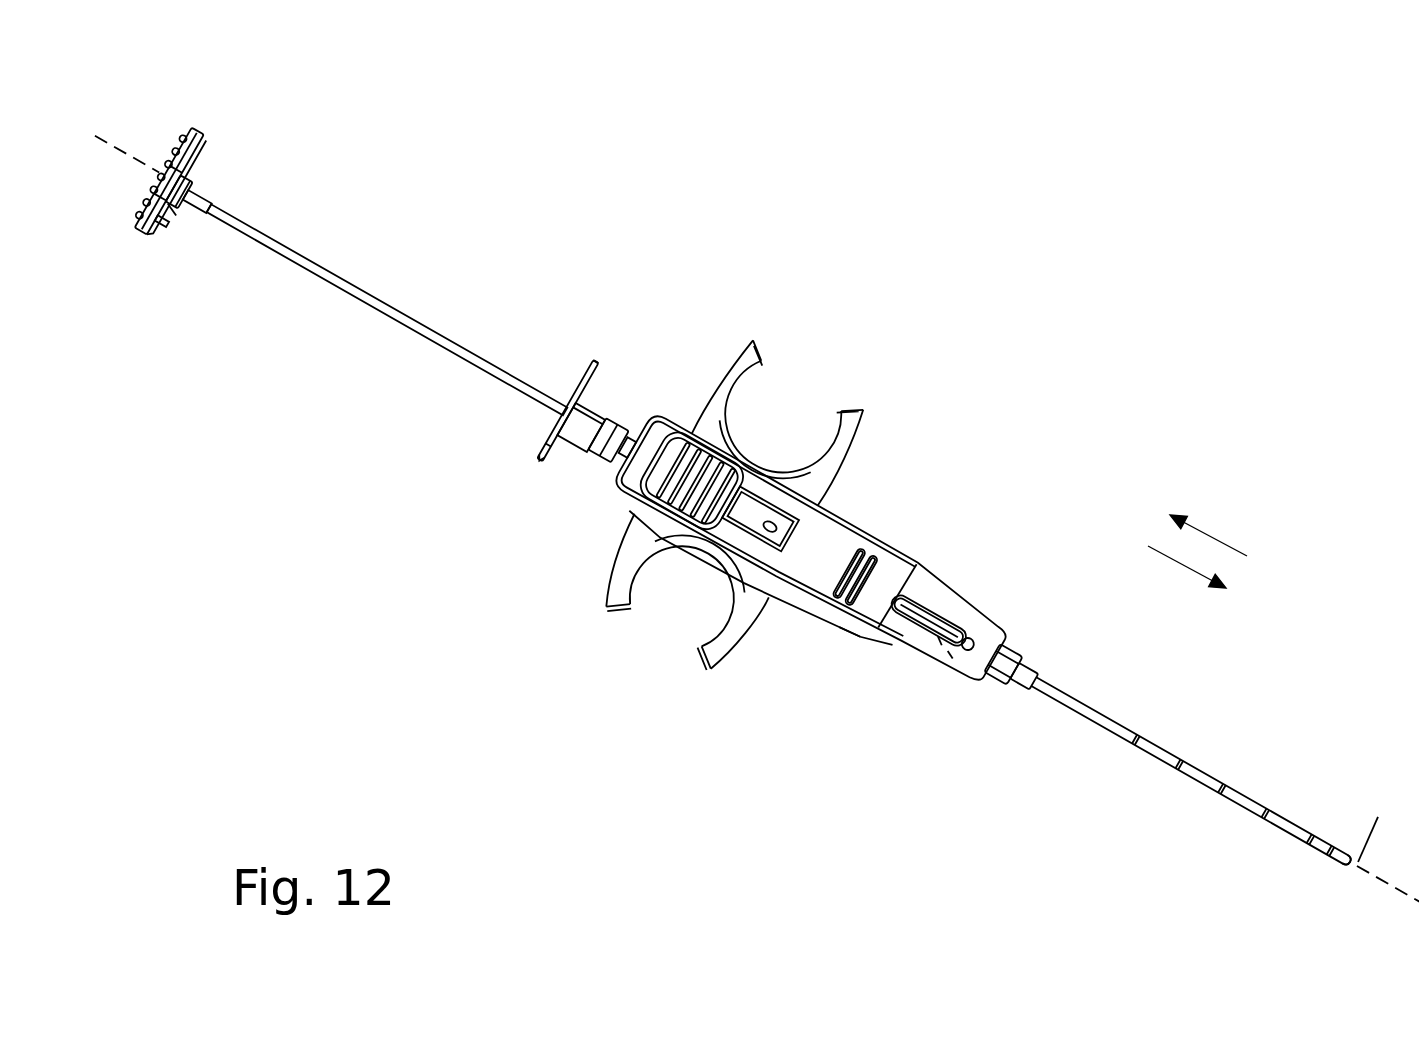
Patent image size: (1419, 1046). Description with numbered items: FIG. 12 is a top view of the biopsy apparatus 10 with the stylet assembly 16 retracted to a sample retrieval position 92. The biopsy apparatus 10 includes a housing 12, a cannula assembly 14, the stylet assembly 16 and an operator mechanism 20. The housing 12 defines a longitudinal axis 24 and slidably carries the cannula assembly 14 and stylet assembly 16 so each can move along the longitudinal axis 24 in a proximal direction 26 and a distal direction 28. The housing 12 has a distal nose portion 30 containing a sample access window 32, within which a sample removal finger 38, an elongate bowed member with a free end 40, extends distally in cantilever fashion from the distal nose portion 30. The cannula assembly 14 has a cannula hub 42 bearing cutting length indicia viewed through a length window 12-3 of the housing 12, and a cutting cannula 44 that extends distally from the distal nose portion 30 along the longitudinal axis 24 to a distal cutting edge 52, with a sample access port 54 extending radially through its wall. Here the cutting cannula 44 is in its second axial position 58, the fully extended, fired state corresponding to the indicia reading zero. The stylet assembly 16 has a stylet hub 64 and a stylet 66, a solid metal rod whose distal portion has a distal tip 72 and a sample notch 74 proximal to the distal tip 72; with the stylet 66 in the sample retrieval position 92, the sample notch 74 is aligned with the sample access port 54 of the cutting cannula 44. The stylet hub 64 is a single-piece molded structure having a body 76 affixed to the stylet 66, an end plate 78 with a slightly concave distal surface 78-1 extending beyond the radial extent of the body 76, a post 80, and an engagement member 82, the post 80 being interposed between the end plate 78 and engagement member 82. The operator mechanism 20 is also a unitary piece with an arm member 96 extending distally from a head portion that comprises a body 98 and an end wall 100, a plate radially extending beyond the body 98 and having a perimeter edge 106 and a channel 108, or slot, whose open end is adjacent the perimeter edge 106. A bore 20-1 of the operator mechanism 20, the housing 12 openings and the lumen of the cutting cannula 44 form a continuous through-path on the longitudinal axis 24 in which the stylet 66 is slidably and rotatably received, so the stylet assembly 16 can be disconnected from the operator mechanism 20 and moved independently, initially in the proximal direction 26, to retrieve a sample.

The biopsy apparatus 10 is at (1180, 296).
The housing 12 is at (668, 400).
The length window 12-3 is at (795, 505).
The cannula assembly 14 is at (1184, 748).
The stylet assembly 16 is at (137, 138).
The operator mechanism 20 is at (531, 420).
The bore 20-1 is at (558, 396).
The longitudinal axis 24 is at (102, 150).
The proximal direction 26 is at (1195, 530).
The distal direction 28 is at (1182, 565).
The distal nose portion 30 is at (870, 640).
The sample access window 32 is at (950, 655).
The sample removal finger 38 is at (920, 608).
The free end 40 is at (943, 625).
The cannula hub 42 is at (772, 520).
The cutting cannula 44 is at (1148, 758).
The distal cutting edge 52 is at (1348, 868).
The sample access port 54 is at (940, 640).
The second axial position 58 is at (1368, 832).
The stylet hub 64 is at (207, 130).
The stylet 66 is at (297, 246).
The distal tip 72 is at (995, 645).
The sample notch 74 is at (960, 640).
The body 76 is at (180, 180).
The end plate 78 is at (148, 232).
The distal surface 78-1 is at (170, 208).
The post 80 is at (152, 232).
The engagement member 82 is at (170, 222).
The sample retrieval position 92 is at (1010, 620).
The arm member 96 is at (612, 455).
The body 98 is at (585, 440).
The end wall 100 is at (605, 355).
The perimeter edge 106 is at (546, 455).
The channel 108 is at (560, 440).